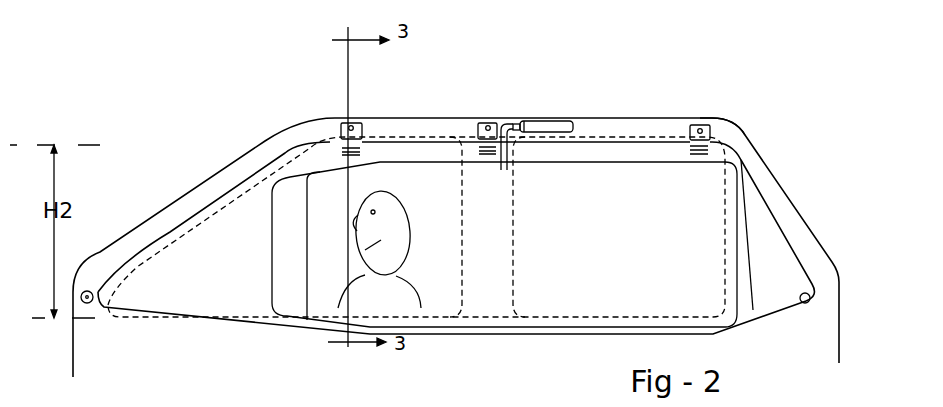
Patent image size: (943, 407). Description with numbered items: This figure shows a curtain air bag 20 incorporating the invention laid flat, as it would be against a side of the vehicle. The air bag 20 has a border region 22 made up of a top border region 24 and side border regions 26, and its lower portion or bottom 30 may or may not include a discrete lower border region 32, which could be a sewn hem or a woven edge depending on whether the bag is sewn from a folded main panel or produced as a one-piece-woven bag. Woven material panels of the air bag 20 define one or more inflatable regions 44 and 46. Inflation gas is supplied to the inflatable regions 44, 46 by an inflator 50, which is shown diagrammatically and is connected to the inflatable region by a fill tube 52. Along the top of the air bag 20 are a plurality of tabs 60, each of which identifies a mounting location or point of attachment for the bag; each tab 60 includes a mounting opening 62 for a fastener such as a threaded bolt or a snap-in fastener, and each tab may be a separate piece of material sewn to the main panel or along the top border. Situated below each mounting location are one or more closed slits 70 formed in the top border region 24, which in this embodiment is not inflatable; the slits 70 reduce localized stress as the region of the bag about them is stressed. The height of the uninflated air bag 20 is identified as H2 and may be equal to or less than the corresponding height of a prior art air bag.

The air bag 20 is at (456, 201).
The border region 22 is at (652, 133).
The top border region 24 is at (682, 118).
The side border regions 26 is at (219, 168).
The lower portion or bottom 30 is at (213, 322).
The lower border region 32 is at (293, 320).
The inflatable region 44 is at (213, 240).
The inflatable region 46 is at (618, 293).
The inflator 50 is at (541, 121).
The fill tube 52 is at (503, 123).
The tabs 60 is at (342, 124).
The mounting opening 62 is at (354, 127).
The closed slits 70 is at (336, 154).